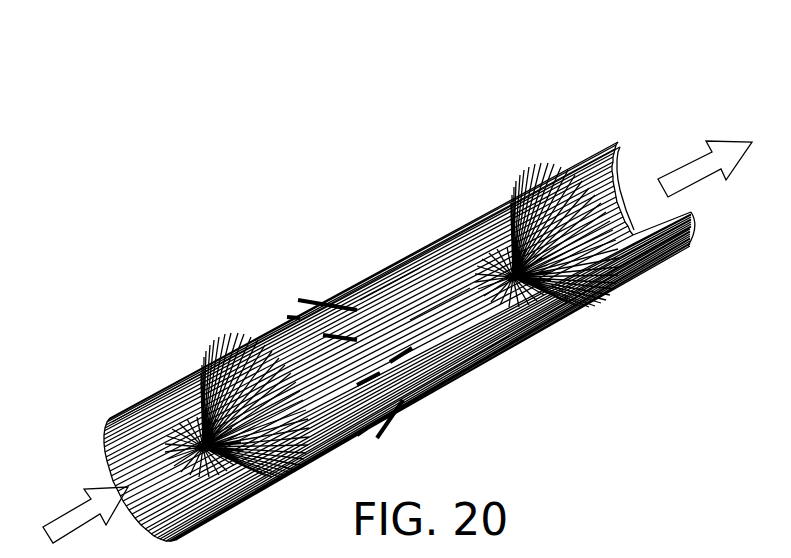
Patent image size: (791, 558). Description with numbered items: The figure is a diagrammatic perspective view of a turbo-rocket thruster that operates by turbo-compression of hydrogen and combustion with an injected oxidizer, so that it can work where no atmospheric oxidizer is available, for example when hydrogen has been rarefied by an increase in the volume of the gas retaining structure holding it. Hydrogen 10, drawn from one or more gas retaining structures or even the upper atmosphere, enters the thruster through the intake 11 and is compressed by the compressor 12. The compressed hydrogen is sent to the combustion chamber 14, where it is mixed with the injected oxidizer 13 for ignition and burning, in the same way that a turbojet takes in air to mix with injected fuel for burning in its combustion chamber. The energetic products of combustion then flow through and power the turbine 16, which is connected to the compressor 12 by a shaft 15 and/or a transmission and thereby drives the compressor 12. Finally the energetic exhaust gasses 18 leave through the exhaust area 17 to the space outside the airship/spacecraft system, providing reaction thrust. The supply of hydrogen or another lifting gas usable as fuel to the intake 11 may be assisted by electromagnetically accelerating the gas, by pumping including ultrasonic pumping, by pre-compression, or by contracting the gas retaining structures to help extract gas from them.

The hydrogen 10 is at (62, 510).
The intake 11 is at (130, 450).
The compressor 12 is at (177, 380).
The injected oxidizer 13 is at (302, 300).
The combustion chamber 14 is at (383, 313).
The shaft 15 is at (432, 312).
The turbine 16 is at (477, 213).
The exhaust area 17 is at (598, 157).
The exhaust gasses 18 is at (718, 155).